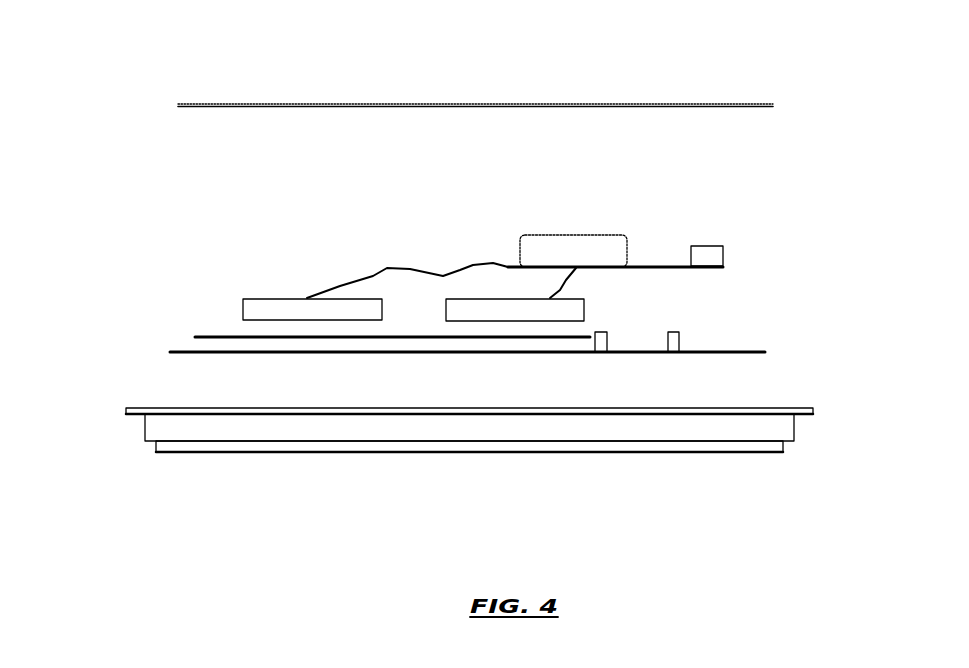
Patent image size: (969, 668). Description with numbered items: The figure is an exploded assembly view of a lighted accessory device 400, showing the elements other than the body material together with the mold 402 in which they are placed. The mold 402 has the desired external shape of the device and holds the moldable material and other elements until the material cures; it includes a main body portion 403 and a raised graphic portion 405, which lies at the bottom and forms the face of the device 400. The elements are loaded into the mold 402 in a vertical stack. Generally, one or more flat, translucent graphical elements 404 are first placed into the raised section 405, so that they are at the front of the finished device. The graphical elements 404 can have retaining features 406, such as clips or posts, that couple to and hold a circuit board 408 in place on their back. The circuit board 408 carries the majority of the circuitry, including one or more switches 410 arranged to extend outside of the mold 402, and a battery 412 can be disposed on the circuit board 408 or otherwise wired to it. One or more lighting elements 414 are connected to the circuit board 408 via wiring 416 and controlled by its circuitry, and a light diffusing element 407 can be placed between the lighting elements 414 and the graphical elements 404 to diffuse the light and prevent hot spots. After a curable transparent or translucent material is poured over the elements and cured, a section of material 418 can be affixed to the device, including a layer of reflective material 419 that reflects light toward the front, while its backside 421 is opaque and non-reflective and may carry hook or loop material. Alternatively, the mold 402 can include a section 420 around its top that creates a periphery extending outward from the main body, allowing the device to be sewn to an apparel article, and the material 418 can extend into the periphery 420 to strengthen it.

The lighted accessory device 400 is at (73, 43).
The mold 402 is at (136, 430).
The main body portion 403 is at (796, 423).
The graphical elements 404 is at (182, 353).
The raised graphic portion 405 is at (757, 454).
The retaining features 406 is at (680, 335).
The light diffusing element 407 is at (220, 335).
The circuit board 408 is at (654, 264).
The switches 410 is at (706, 247).
The battery 412 is at (560, 234).
The lighting elements 414 is at (288, 298).
The wiring 416 is at (394, 262).
The section of material 418 is at (487, 97).
The layer of reflective material 419 is at (309, 108).
The section around the top of the mold 420 is at (130, 407).
The backside 421 is at (378, 103).